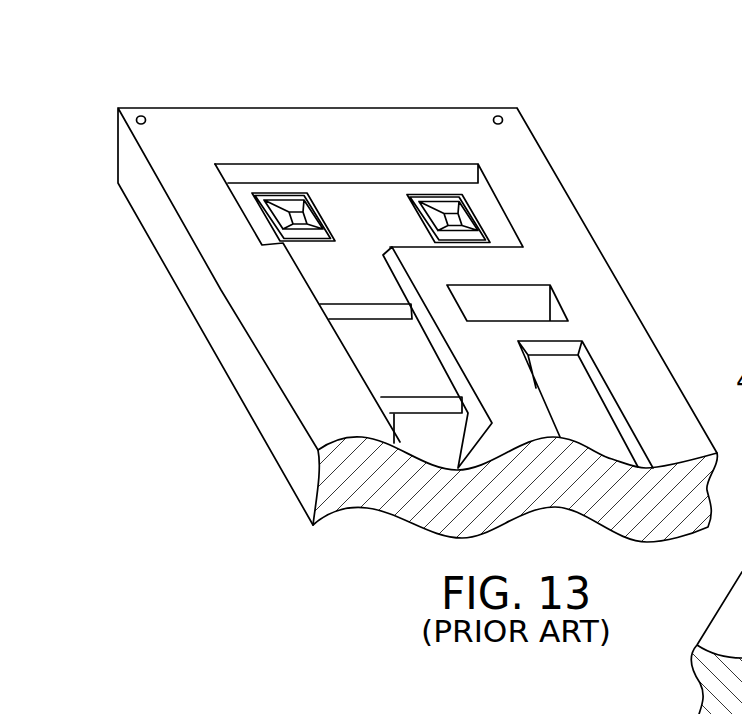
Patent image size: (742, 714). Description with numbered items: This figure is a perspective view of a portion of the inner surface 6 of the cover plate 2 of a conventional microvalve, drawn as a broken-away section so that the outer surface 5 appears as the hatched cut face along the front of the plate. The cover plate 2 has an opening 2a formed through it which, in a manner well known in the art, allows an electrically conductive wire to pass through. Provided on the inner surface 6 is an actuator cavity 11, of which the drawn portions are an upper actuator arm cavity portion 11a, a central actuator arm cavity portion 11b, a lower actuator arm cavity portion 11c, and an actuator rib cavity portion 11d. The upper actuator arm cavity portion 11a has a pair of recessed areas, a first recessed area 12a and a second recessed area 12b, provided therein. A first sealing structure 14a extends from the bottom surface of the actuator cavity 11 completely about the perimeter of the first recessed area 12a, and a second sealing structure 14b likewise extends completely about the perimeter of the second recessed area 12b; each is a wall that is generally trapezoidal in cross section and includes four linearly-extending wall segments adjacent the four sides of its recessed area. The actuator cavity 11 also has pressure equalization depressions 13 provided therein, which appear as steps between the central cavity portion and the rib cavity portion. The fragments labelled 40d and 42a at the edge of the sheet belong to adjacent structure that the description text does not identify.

The cover plate 2 is at (307, 108).
The opening 2a is at (517, 300).
The outer surface 5 is at (343, 509).
The inner surface 6 is at (448, 126).
The actuator cavity 11 is at (386, 207).
The upper actuator arm cavity portion 11a is at (357, 212).
The central actuator arm cavity portion 11b is at (388, 353).
The lower actuator arm cavity portion 11c is at (447, 445).
The actuator rib cavity portion 11d is at (546, 366).
The first recessed area 12a is at (292, 217).
The second recessed area 12b is at (453, 222).
The pressure equalization depression 13 is at (370, 313).
The first sealing structure 14a is at (264, 208).
The second sealing structure 14b is at (460, 240).
The adjacent member 40d is at (741, 542).
The adjacent member portion 42a is at (727, 418).